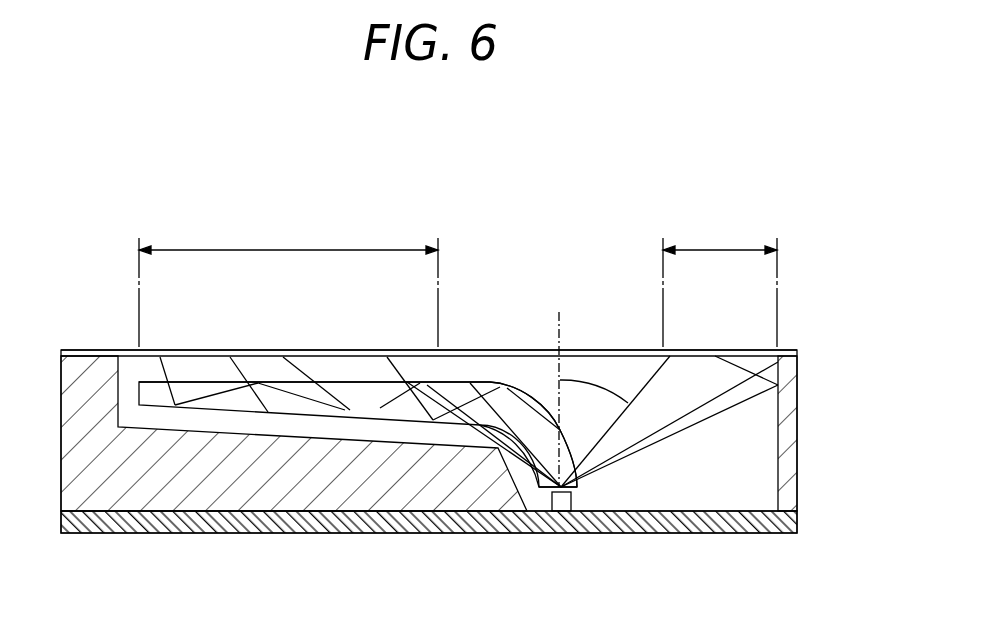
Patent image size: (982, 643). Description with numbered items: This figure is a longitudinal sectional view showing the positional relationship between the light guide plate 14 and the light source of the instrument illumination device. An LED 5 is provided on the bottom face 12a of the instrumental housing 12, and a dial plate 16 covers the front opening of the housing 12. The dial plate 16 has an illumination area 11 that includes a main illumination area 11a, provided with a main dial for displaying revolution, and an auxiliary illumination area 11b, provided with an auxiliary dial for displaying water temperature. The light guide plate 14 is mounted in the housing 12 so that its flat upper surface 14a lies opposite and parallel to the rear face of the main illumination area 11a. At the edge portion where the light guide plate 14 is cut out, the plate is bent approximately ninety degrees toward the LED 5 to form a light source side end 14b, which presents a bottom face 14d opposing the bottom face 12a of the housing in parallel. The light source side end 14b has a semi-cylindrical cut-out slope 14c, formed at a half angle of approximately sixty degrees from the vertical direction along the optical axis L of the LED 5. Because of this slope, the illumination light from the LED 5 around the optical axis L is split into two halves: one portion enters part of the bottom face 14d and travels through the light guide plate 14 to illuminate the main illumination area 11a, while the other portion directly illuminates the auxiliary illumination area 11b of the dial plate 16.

The LED 5 is at (571, 500).
The illumination area 11 is at (245, 197).
The main illumination area 11a is at (266, 248).
The auxiliary illumination area 11b is at (706, 248).
The instrumental housing 12 is at (802, 508).
The bottom face 12a is at (650, 511).
The light guide plate 14 is at (489, 376).
The flat upper surface 14a is at (268, 382).
The light source side end 14b is at (571, 426).
The cut-out slope 14c is at (577, 487).
The bottom face 14d is at (528, 508).
The dial plate 16 is at (463, 346).
The optical axis L is at (558, 332).